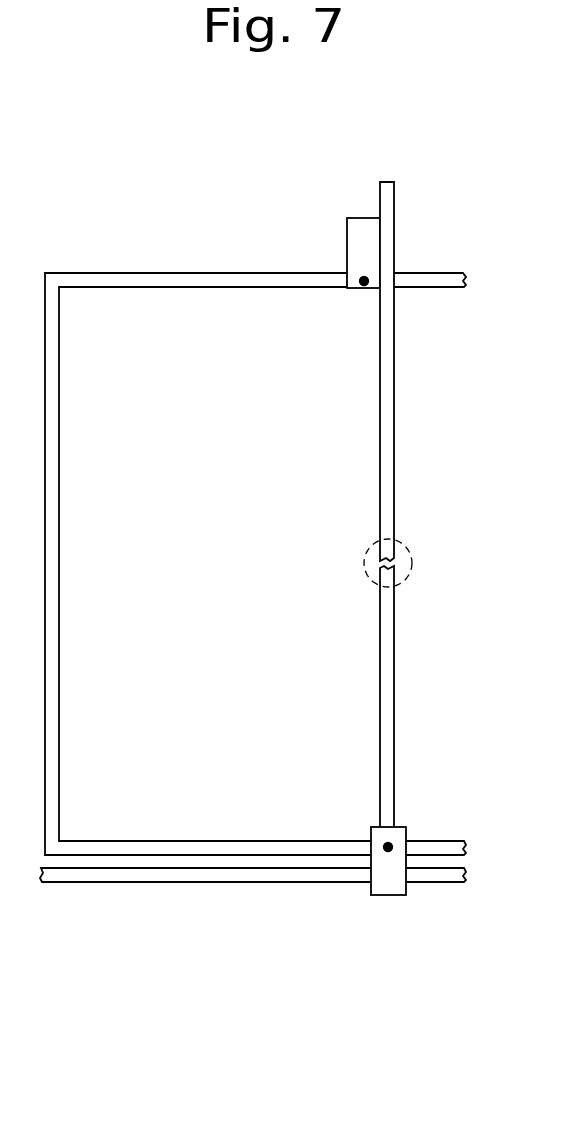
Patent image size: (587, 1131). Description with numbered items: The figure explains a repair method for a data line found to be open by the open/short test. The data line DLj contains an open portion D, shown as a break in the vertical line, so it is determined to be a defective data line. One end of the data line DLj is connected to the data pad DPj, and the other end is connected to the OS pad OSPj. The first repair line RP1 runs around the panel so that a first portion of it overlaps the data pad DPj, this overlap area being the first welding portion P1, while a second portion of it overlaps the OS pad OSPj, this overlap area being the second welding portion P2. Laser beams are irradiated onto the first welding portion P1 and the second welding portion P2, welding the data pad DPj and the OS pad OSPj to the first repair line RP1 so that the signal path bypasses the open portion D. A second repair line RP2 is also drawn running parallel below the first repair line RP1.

The first repair line RP1 is at (161, 275).
The second repair pattern RP2 is at (192, 878).
The OS pad OSPj is at (362, 225).
The data line DLj is at (392, 662).
The data pad DPj is at (387, 897).
The first welding portion P1 is at (388, 842).
The second welding portion P2 is at (364, 286).
The open portion D is at (400, 545).